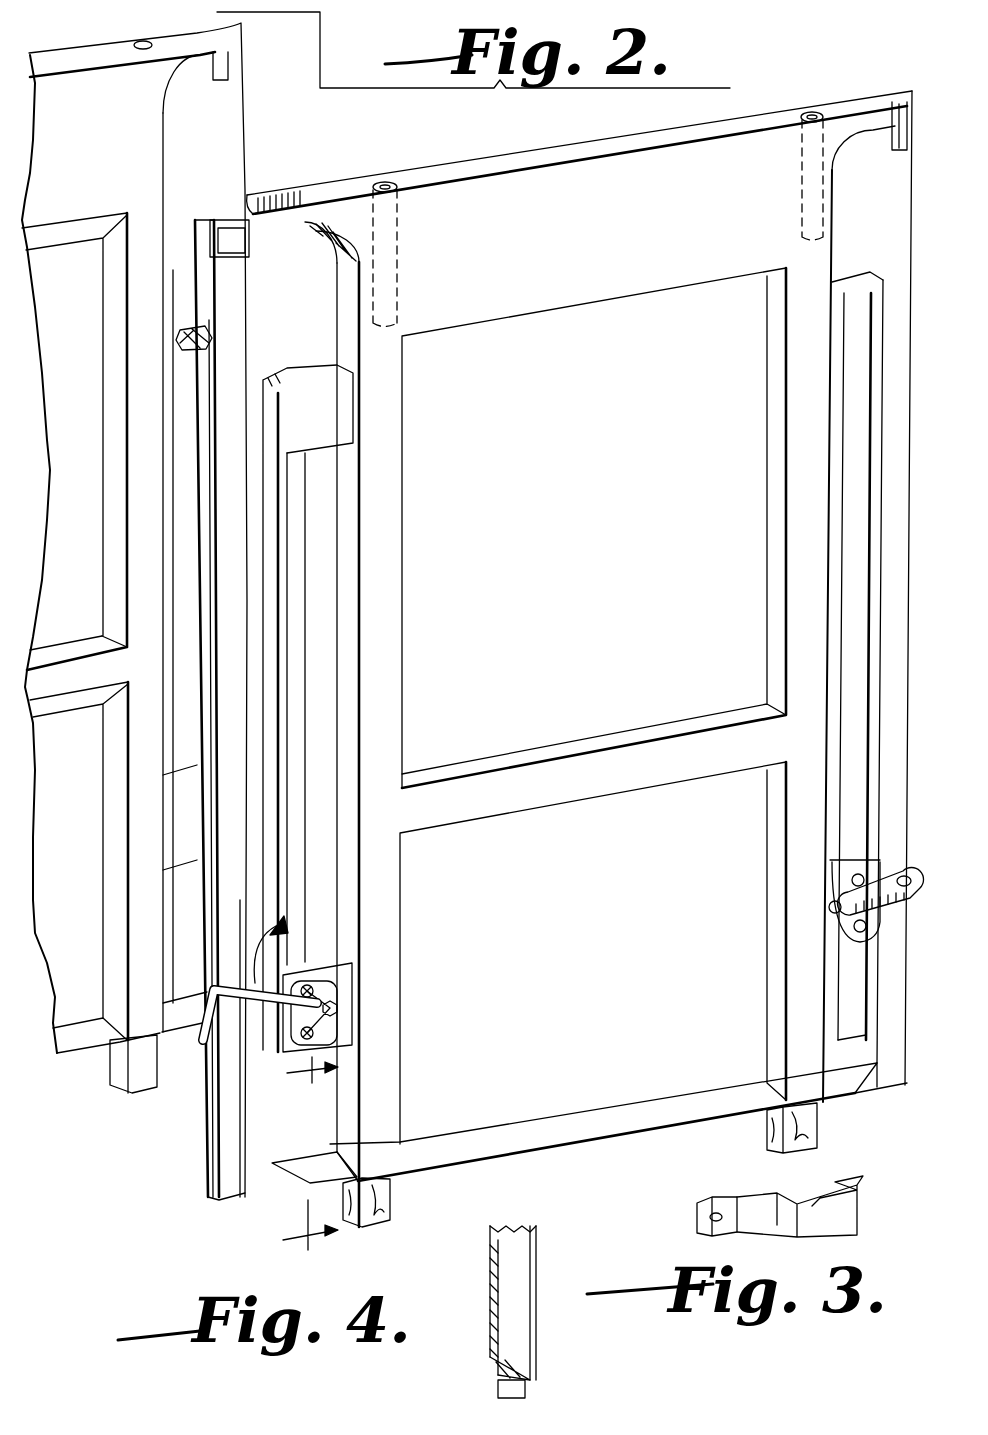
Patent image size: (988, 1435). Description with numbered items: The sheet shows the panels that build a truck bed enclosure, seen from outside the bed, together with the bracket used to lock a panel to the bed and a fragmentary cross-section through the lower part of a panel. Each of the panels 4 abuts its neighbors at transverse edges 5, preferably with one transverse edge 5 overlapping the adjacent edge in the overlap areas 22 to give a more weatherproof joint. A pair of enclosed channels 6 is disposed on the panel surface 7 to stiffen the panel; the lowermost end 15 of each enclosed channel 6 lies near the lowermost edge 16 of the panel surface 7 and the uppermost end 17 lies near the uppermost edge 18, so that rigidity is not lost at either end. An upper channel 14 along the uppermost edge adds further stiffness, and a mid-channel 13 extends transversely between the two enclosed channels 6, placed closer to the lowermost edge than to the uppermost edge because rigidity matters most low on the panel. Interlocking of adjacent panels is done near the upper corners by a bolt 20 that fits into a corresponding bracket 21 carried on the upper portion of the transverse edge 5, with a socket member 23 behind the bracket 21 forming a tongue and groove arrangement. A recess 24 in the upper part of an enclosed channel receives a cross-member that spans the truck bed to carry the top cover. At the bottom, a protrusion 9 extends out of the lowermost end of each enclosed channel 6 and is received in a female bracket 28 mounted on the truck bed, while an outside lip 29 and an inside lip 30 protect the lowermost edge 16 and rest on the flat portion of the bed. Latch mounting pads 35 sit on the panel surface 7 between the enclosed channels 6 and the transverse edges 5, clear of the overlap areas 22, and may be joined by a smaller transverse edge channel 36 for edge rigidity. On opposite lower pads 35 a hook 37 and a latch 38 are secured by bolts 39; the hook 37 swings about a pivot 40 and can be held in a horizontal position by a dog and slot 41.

In FIG. 2, the panel 4 is at (618, 661).
In FIG. 2, the transverse edge 5 is at (241, 115).
In FIG. 2, the enclosed channel 6 is at (133, 534).
In FIG. 4, the enclosed channel 6 is at (536, 1280).
In FIG. 2, the panel surface 7 is at (82, 1013).
In FIG. 4, the panel surface 7 is at (500, 1257).
In FIG. 2, the protrusion 9 is at (375, 1227).
In FIG. 4, the protrusion 9 is at (523, 1383).
In FIG. 2, the mid-channel 13 is at (610, 780).
In FIG. 2, the upper channel 14 is at (655, 209).
In FIG. 2, the lowermost end 15 is at (397, 1180).
In FIG. 2, the lowermost edge 16 is at (510, 1167).
In FIG. 4, the lowermost edge 16 is at (500, 1385).
In FIG. 2, the uppermost end 17 is at (363, 217).
In FIG. 2, the uppermost edge 18 is at (197, 33).
In FIG. 2, the bolt 20 is at (228, 68).
In FIG. 2, the bracket 21 is at (235, 233).
In FIG. 2, the overlap area 22 is at (230, 143).
In FIG. 2, the socket member 23 is at (188, 210).
In FIG. 2, the recess 24 is at (138, 42).
In FIG. 3, the bracket 28 is at (842, 1218).
In FIG. 2, the outside lip 29 is at (607, 1133).
In FIG. 4, the outside lip 29 is at (530, 1357).
In FIG. 4, the inside lip 30 is at (490, 1345).
In FIG. 2, the latch mounting pad 35 is at (170, 247).
In FIG. 2, the transverse edge channel 36 is at (187, 320).
In FIG. 2, the hook 37 is at (250, 1000).
In FIG. 2, the latch 38 is at (913, 877).
In FIG. 2, the bolt 39 is at (333, 1016).
In FIG. 2, the pivot 40 is at (337, 1010).
In FIG. 2, the dog and slot 41 is at (337, 1040).